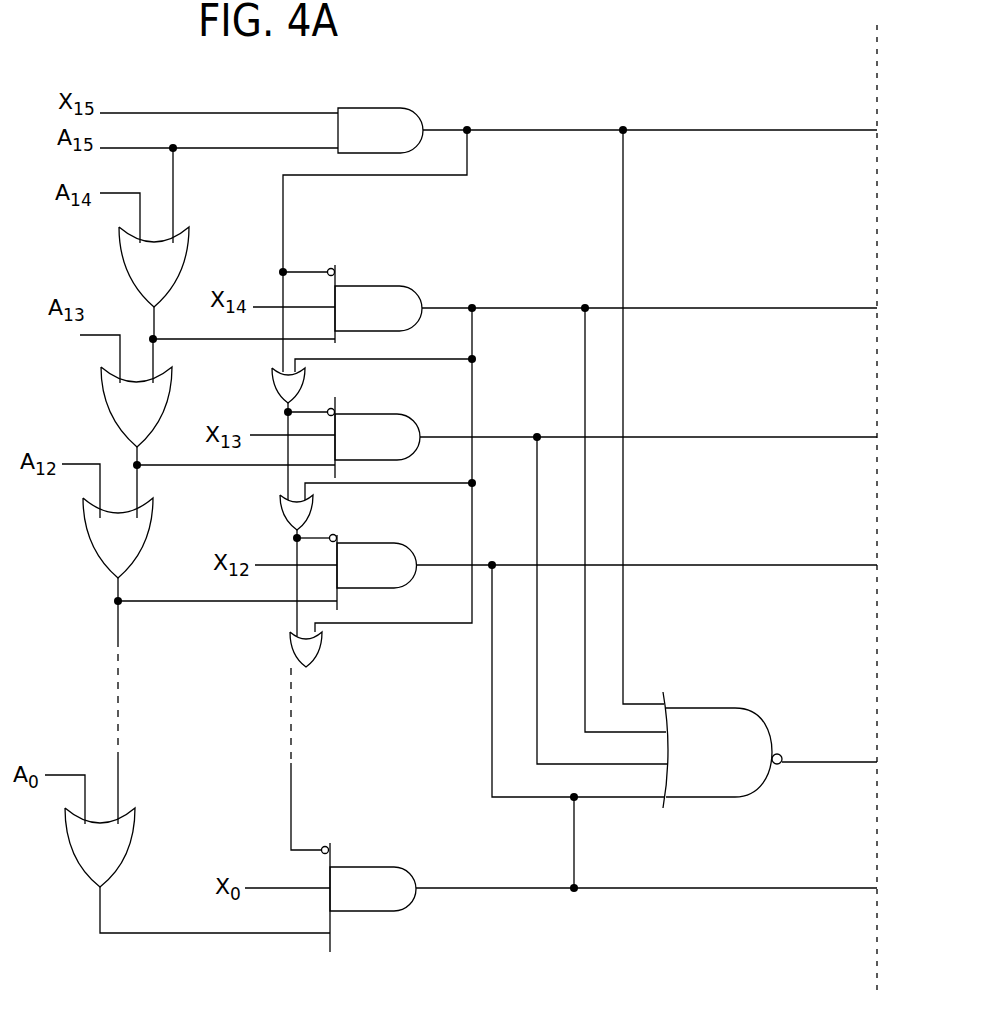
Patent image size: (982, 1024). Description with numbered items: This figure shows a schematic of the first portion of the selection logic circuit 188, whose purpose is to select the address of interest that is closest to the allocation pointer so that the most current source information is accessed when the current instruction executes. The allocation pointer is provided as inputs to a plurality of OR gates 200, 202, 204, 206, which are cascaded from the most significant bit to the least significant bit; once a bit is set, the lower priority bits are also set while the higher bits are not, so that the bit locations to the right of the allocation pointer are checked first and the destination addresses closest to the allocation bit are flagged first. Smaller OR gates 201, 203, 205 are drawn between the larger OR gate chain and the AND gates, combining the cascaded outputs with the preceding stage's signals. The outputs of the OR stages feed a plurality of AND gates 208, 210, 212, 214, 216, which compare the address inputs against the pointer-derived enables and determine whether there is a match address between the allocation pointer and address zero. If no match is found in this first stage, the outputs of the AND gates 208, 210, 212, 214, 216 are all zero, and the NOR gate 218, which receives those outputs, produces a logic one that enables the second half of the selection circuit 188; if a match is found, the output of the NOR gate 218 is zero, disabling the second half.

The selection logic circuit 188 is at (590, 922).
The OR gate 200 is at (122, 268).
The OR gate 201 is at (272, 372).
The OR gate 202 is at (105, 415).
The OR gate 203 is at (282, 507).
The OR gate 204 is at (173, 460).
The OR gate 205 is at (290, 647).
The OR gate 206 is at (93, 556).
The AND gate 208 is at (413, 110).
The AND gate 210 is at (412, 288).
The AND gate 212 is at (418, 422).
The AND gate 214 is at (408, 548).
The AND gate 216 is at (408, 872).
The NOR gate 218 is at (752, 733).